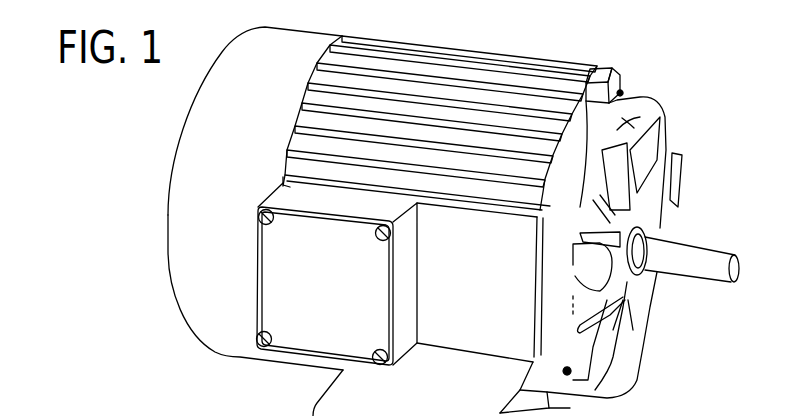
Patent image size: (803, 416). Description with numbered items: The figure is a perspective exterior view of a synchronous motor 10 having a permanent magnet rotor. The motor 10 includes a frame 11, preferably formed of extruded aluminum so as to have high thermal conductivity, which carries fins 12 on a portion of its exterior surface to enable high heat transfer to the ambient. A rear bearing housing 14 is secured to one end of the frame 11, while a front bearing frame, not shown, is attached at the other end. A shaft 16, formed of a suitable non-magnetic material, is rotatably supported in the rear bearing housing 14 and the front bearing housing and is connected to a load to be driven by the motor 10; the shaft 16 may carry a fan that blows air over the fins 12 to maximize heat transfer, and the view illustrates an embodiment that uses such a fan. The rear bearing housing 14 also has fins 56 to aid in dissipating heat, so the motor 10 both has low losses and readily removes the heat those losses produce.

The synchronous motor 10 is at (160, 295).
The frame 11 is at (588, 53).
The fins 12 is at (333, 123).
The rear bearing housing 14 is at (640, 91).
The shaft 16 is at (685, 258).
The fins 56 is at (630, 345).